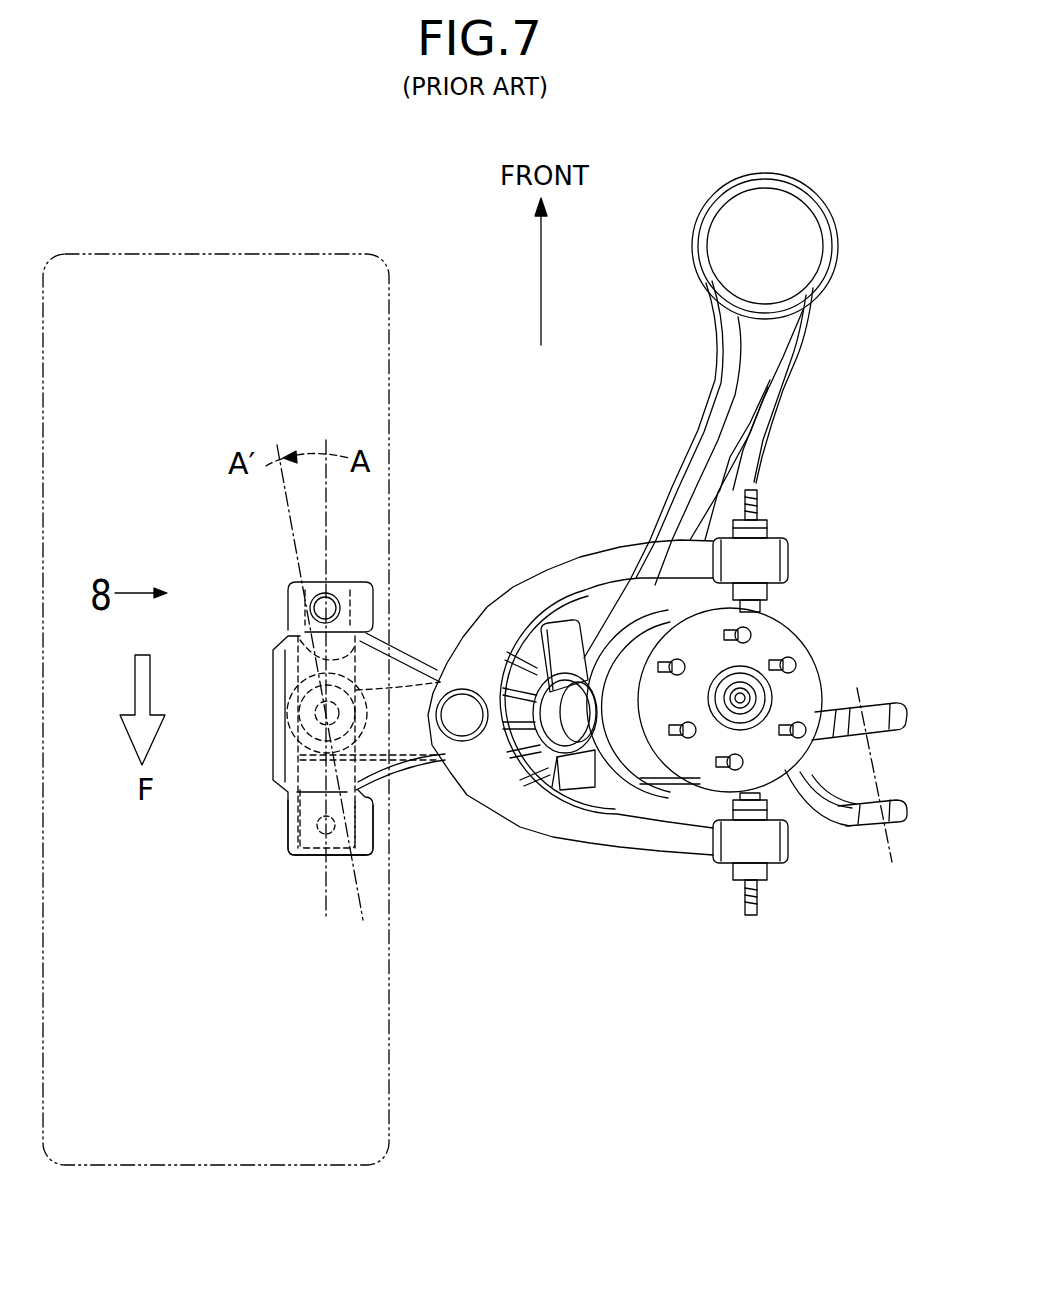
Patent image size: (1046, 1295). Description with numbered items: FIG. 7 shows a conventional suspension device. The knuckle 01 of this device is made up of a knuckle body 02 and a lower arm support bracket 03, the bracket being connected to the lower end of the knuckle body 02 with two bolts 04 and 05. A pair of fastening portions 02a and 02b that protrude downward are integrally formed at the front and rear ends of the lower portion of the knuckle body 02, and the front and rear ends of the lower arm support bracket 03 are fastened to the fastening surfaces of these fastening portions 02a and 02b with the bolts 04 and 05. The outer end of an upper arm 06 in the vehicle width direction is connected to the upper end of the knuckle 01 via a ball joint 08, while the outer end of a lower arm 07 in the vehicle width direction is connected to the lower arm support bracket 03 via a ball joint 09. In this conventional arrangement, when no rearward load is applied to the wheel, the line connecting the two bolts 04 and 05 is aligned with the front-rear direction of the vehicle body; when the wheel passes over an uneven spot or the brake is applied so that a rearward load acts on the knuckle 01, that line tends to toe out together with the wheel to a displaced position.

The knuckle 01 is at (262, 760).
The knuckle body 02 is at (420, 642).
The fastening portion 02a is at (372, 612).
The fastening portion 02b is at (360, 822).
The lower arm support bracket 03 is at (290, 660).
The bolt 04 is at (333, 600).
The bolt 05 is at (306, 828).
The upper arm 06 is at (586, 567).
The lower arm 07 is at (690, 472).
The ball joint 08 is at (465, 727).
The ball joint 09 is at (290, 716).